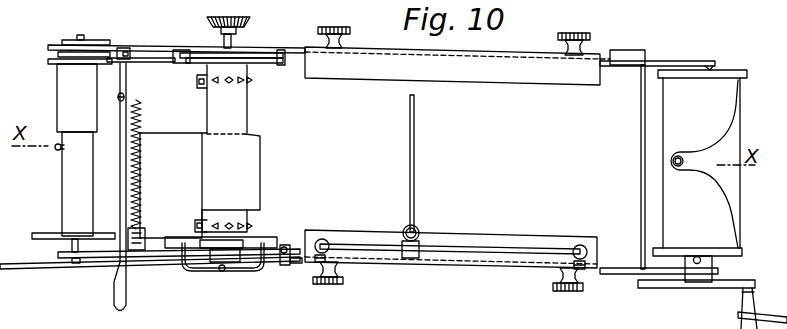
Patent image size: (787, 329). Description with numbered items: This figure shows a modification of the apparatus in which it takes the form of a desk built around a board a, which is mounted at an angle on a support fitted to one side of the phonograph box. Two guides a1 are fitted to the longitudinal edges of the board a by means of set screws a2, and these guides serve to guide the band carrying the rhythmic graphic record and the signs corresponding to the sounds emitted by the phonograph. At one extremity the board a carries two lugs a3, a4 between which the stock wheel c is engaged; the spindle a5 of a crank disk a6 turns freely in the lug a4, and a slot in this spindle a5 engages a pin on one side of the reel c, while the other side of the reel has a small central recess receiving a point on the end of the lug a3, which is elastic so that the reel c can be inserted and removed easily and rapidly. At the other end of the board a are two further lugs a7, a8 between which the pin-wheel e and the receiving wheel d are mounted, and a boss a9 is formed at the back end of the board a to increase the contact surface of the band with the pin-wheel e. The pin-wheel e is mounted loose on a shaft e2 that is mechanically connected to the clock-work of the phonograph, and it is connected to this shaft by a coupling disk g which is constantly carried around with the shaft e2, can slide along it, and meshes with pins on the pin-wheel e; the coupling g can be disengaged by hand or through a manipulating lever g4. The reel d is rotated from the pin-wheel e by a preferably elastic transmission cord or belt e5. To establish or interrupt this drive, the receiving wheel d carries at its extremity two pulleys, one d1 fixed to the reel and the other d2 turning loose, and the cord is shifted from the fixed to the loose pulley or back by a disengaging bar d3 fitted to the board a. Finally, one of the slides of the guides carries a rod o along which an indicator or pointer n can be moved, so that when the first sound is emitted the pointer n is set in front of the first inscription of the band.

The board a is at (562, 113).
The guides a1 is at (508, 62).
The set screws a2 is at (334, 27).
The lug a3 is at (627, 276).
The lug a4 is at (660, 64).
The spindle a5 is at (710, 248).
The crank disk a6 is at (705, 289).
The lug a7 is at (157, 258).
The lug a8 is at (143, 45).
The boss a9 is at (165, 175).
The stock wheel c is at (724, 72).
The receiving wheel d is at (55, 200).
The fixed pulley d1 is at (48, 61).
The loose pulley d2 is at (49, 45).
The disengaging bar d3 is at (119, 136).
The pin-wheel e is at (232, 141).
The shaft e2 is at (237, 41).
The transmission cord or belt e5 is at (181, 64).
The coupling disk g is at (245, 242).
The manipulating lever g4 is at (28, 268).
The indicator or pointer n is at (414, 155).
The rod o is at (506, 247).